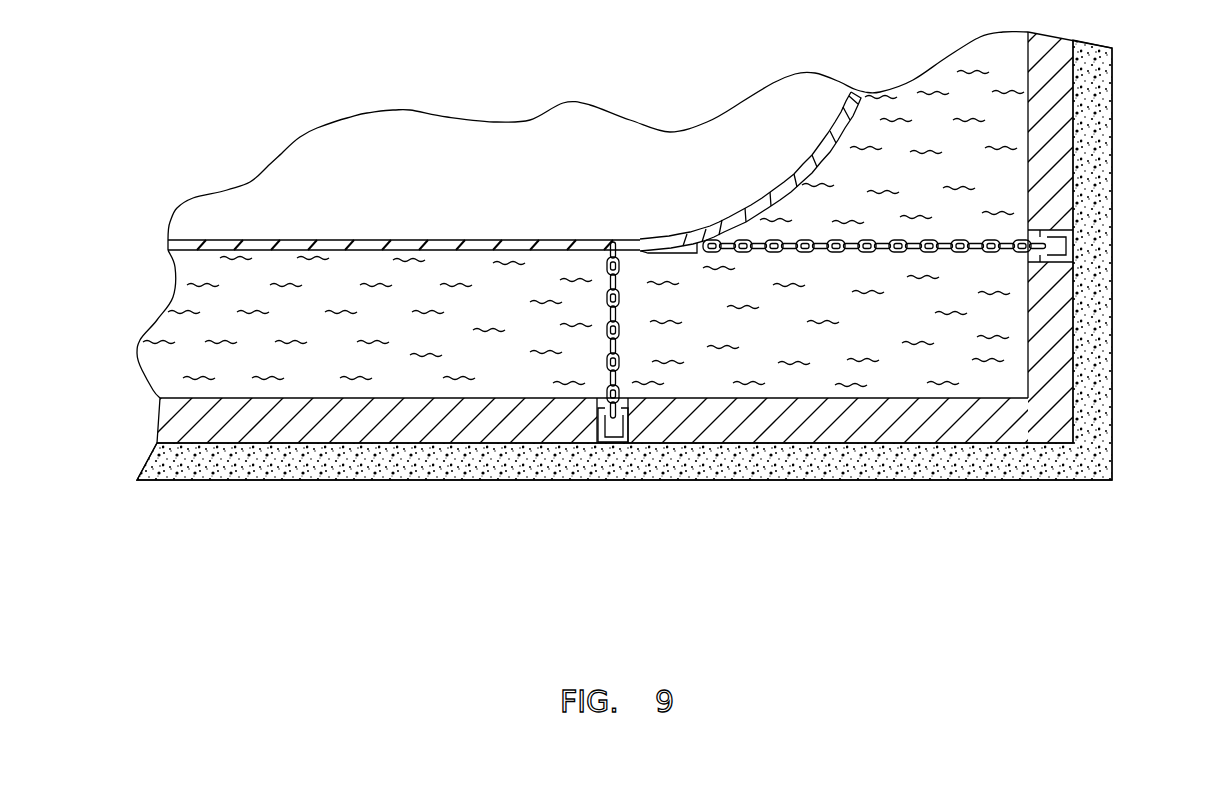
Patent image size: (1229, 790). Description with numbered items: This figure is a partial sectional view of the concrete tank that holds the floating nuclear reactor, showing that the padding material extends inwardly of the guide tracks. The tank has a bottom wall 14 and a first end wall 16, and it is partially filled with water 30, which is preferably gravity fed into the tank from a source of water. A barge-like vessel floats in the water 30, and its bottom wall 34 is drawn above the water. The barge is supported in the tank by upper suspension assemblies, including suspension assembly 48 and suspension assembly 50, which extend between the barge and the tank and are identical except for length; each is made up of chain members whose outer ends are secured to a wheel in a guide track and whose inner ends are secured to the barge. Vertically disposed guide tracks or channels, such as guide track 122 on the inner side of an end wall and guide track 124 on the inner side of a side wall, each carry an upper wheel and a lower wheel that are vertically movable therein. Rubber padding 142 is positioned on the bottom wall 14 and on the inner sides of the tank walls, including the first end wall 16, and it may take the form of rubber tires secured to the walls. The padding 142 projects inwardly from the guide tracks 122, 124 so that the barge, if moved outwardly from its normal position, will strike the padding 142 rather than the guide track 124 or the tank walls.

The bottom wall 14 is at (447, 347).
The first end wall 16 is at (247, 480).
The water 30 is at (307, 368).
The bottom wall 34 is at (457, 178).
The suspension assembly 48 is at (941, 258).
The suspension assembly 50 is at (616, 334).
The guide track 122 is at (1055, 258).
The guide track 124 is at (597, 430).
The rubber padding 142 is at (858, 413).